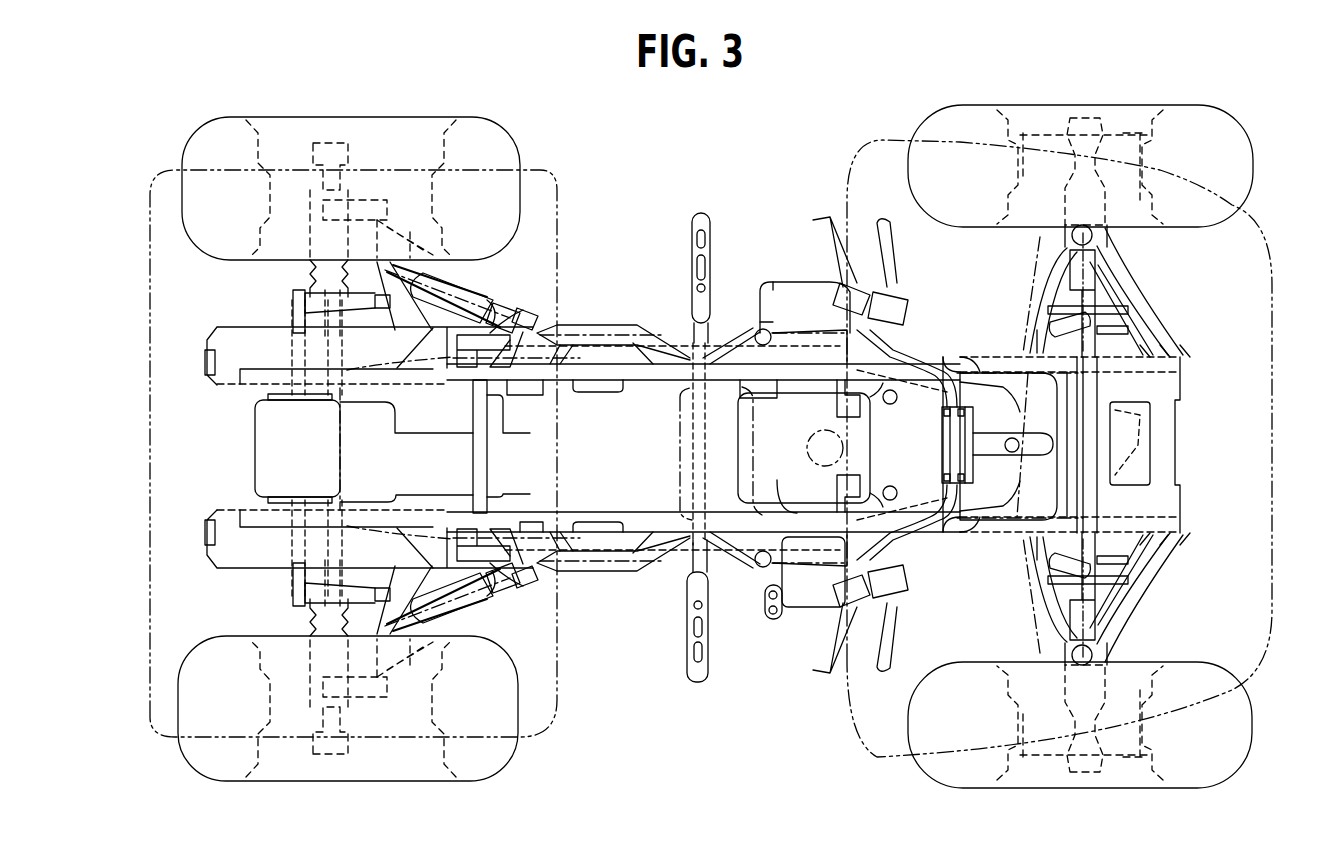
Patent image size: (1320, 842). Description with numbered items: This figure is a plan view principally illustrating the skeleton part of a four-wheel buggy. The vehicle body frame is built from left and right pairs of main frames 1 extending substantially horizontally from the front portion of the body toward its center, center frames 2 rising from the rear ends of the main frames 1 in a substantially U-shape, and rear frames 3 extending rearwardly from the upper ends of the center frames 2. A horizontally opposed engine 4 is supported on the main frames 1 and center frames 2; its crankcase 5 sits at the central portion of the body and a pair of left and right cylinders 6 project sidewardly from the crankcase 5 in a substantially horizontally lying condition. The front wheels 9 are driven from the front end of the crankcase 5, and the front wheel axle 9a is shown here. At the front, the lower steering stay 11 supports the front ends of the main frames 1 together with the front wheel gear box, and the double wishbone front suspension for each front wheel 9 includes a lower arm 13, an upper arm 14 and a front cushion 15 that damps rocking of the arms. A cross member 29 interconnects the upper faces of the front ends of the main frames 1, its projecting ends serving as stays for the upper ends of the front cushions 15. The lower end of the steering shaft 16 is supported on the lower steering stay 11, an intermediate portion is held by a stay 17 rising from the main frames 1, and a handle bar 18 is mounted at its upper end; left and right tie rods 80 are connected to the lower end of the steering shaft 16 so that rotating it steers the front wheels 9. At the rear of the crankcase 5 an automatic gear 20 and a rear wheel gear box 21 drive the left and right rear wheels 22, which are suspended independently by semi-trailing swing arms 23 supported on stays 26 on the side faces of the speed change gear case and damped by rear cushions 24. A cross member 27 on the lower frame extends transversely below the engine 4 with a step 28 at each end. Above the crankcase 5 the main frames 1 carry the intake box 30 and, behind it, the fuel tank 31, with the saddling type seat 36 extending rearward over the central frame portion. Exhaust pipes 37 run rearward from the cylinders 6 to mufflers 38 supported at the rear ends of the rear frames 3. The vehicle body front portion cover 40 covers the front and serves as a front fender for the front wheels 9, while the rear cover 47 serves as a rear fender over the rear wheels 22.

The main frame 1 is at (742, 360).
The center frame 2 is at (608, 353).
The rear frame 3 is at (240, 388).
The engine 4 is at (771, 450).
The crankcase 5 is at (873, 432).
The cylinder 6 is at (793, 280).
The front wheel 9 is at (923, 123).
The front wheel axle 9a is at (1183, 364).
The lower steering stay 11 is at (1168, 386).
The lower arm 13 is at (1122, 265).
The upper arm 14 is at (1112, 290).
The front cushion 15 is at (1108, 320).
The steering shaft 16 is at (993, 455).
The stay 17 is at (958, 488).
The handle bar 18 is at (893, 340).
The automatic gear 20 is at (664, 388).
The rear wheel gear box 21 is at (380, 423).
The rear wheel 22 is at (500, 127).
The swing arm 23 is at (393, 222).
The rear cushion 24 is at (462, 290).
The stay 26 is at (538, 310).
The cross member 27 is at (680, 436).
The step 28 is at (708, 216).
The cross member 29 is at (1023, 353).
The intake box 30 is at (903, 573).
The fuel tank 31 is at (680, 460).
The saddling type seat 36 is at (770, 455).
The exhaust pipe 37 is at (582, 323).
The muffler 38 is at (232, 333).
The vehicle body front portion cover 40 is at (865, 152).
The rear cover 47 is at (557, 172).
The tie rod 80 is at (1035, 277).